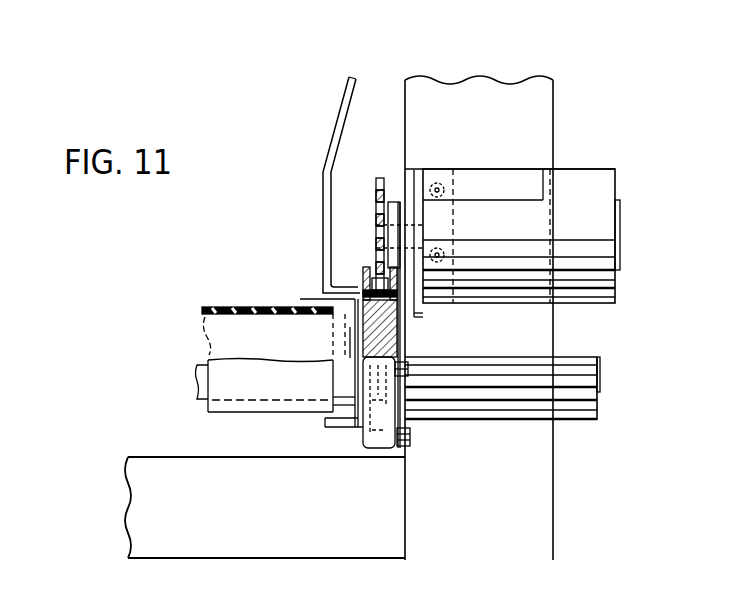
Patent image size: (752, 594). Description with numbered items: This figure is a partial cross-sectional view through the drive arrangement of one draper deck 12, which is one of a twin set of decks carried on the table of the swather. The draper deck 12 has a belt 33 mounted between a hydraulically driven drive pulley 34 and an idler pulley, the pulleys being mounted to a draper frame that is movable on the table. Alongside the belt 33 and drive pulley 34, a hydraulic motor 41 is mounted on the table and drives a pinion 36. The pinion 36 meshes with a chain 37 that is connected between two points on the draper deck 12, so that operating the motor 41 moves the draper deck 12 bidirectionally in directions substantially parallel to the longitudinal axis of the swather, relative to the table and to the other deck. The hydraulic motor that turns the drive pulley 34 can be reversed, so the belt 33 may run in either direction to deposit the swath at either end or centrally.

The draper deck 12 is at (150, 238).
The belt 33 is at (233, 306).
The drive pulley 34 is at (197, 378).
The pinion 36 is at (380, 178).
The chain 37 is at (372, 282).
The hydraulic motor 41 is at (600, 169).